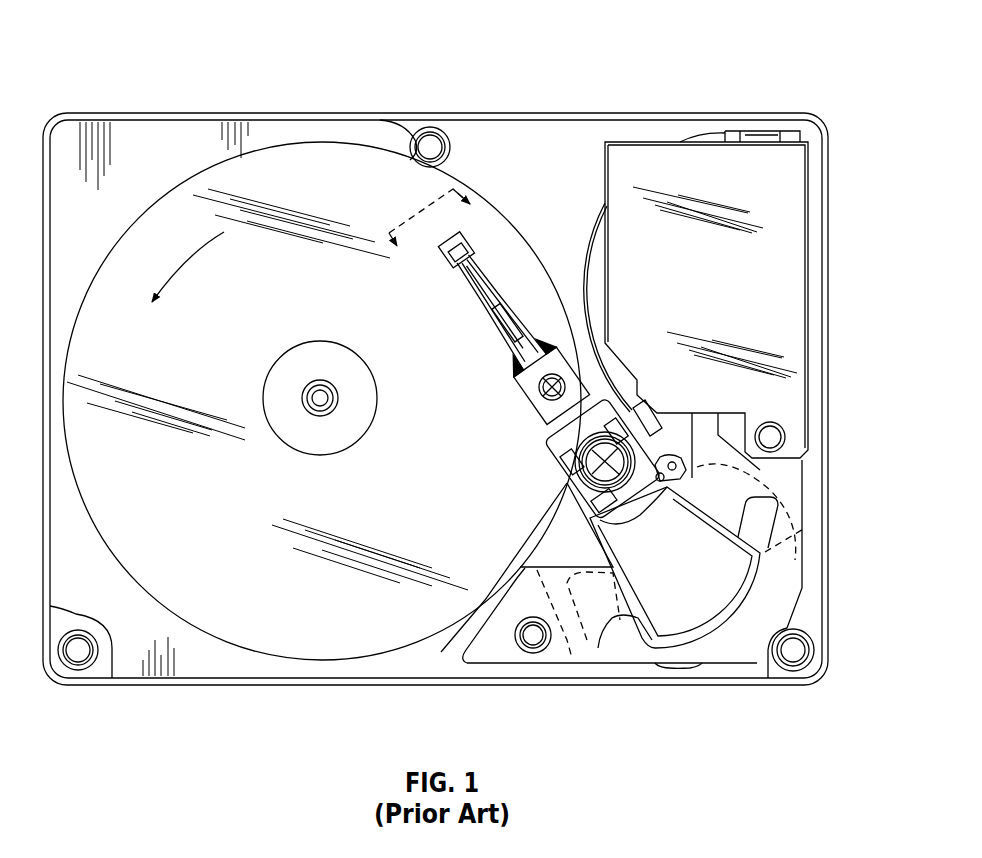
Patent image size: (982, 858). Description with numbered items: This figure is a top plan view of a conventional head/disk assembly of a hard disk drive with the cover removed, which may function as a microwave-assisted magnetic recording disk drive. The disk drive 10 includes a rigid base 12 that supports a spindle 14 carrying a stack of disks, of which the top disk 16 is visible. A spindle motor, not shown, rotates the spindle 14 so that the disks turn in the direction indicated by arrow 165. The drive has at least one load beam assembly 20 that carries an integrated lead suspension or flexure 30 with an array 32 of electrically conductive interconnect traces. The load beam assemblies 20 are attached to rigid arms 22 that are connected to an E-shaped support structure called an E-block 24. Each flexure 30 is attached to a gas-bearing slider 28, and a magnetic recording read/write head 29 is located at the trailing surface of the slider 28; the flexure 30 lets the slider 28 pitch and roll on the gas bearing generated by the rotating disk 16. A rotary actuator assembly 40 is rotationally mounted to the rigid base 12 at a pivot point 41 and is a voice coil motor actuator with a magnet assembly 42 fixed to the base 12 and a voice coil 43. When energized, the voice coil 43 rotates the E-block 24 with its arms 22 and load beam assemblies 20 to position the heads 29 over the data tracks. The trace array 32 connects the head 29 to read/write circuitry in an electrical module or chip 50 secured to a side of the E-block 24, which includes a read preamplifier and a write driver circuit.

The disk drive 10 is at (118, 44).
The rigid base 12 is at (222, 688).
The spindle 14 is at (320, 342).
The top disk 16 is at (333, 661).
The arrow 165 is at (186, 266).
The load beam assembly 20 is at (507, 377).
The rigid arm 22 is at (527, 403).
The E-block 24 is at (557, 450).
The gas-bearing slider 28 is at (474, 237).
The magnetic recording read/write head 29 is at (457, 252).
The flexure 30 is at (468, 260).
The array of interconnect traces 32 is at (494, 297).
The rotary actuator assembly 40 is at (554, 531).
The pivot point 41 is at (568, 482).
The magnet assembly 42 is at (716, 432).
The voice coil 43 is at (760, 552).
The electrical module or chip 50 is at (652, 412).